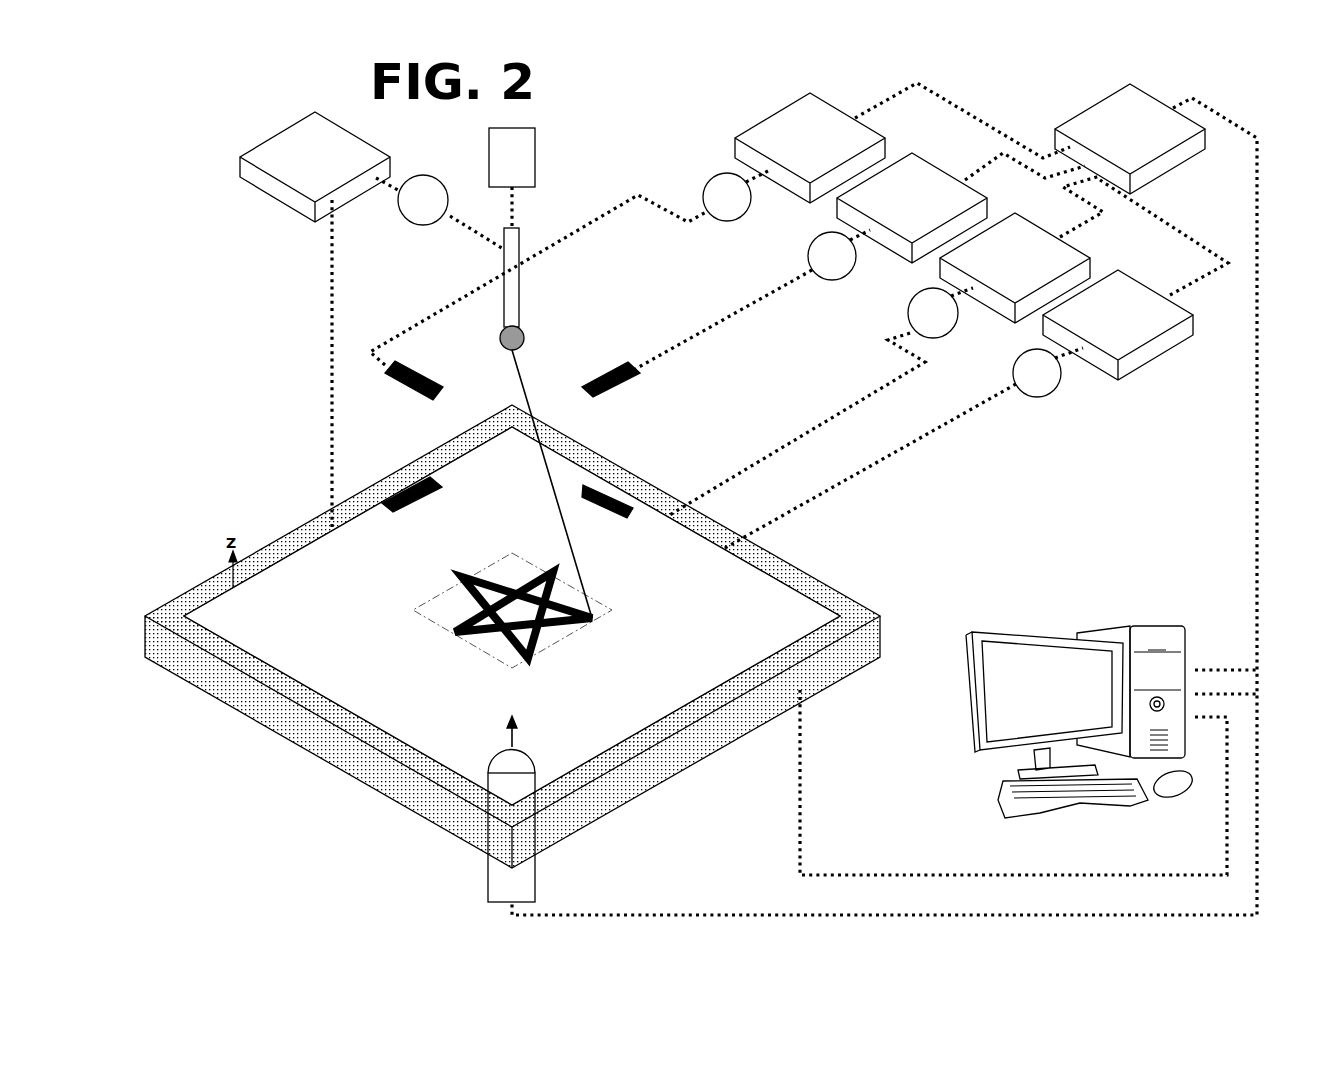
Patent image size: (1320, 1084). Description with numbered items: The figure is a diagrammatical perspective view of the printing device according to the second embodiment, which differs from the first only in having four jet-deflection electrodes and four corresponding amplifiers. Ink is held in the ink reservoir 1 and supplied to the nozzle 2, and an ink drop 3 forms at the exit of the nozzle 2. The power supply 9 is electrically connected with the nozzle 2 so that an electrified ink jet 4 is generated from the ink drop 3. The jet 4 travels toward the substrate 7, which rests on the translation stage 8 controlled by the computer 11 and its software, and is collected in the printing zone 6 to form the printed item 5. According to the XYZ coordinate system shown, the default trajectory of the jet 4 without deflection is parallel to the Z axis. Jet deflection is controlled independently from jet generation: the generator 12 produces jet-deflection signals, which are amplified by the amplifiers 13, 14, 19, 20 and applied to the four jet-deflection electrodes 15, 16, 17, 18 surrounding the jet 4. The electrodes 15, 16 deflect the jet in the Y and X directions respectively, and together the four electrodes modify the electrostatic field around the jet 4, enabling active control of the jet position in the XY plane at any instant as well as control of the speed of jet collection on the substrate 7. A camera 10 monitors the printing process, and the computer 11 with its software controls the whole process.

The ink reservoir 1 is at (517, 161).
The nozzle 2 is at (512, 297).
The ink drop 3 is at (508, 335).
The ink jet 4 is at (528, 402).
The printed item 5 is at (478, 630).
The printing zone 6 is at (598, 604).
The substrate 7 is at (632, 710).
The translation stage 8 is at (313, 742).
The power supply 9 is at (303, 163).
The camera 10 is at (513, 878).
The computer 11 is at (1047, 688).
The generator of jet-deflection signals 12 is at (1122, 132).
The amplifier 13 is at (875, 195).
The amplifier 14 is at (988, 247).
The electrode 15 is at (613, 393).
The electrode 16 is at (622, 493).
The jet-deflection electrode 17 is at (405, 385).
The jet-deflection electrode 18 is at (400, 493).
The amplifier 19 is at (805, 135).
The amplifier 20 is at (1118, 325).